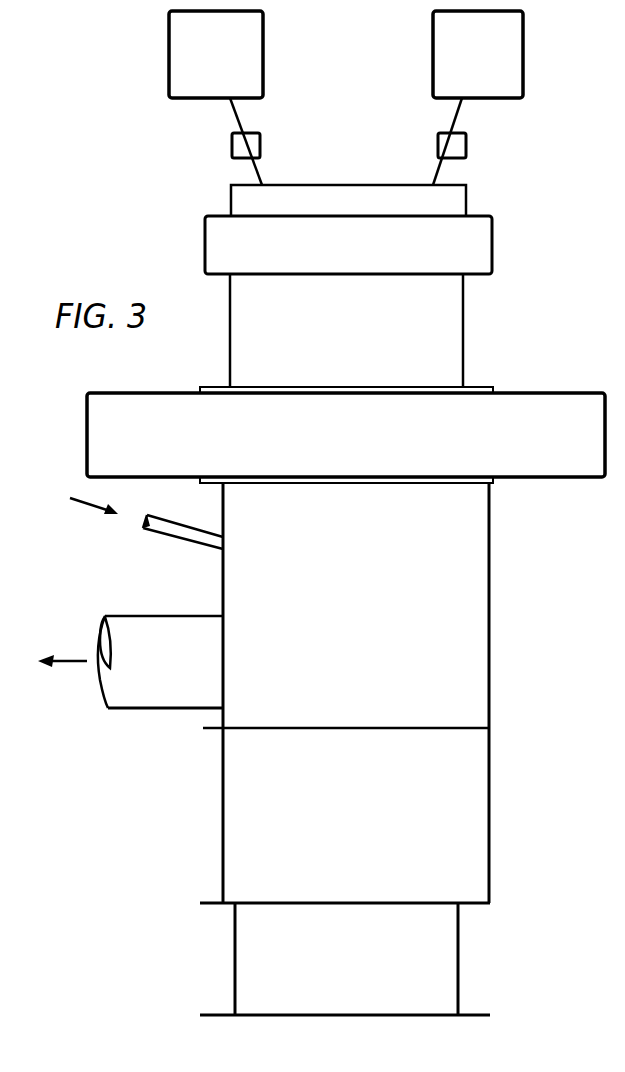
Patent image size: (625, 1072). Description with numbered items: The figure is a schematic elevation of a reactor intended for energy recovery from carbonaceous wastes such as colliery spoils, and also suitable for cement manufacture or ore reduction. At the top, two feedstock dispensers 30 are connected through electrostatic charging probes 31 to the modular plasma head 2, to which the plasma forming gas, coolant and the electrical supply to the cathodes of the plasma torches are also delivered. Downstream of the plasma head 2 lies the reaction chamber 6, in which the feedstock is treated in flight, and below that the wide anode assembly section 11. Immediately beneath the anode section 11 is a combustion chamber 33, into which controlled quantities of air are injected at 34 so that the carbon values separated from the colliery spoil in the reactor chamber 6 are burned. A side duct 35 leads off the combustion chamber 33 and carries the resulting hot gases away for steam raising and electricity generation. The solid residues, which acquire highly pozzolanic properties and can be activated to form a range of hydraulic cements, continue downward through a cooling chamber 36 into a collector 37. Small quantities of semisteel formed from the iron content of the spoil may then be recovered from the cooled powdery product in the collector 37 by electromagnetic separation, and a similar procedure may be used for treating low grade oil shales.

The modular plasma head 2 is at (492, 243).
The reaction chamber 6 is at (463, 333).
The anode assembly section 11 is at (553, 465).
The feedstock dispensers 30 is at (203, 66).
The electrostatic charging probes 31 is at (232, 145).
The combustion chamber 33 is at (478, 605).
The air injection 34 is at (180, 538).
The side duct 35 is at (165, 697).
The cooling chamber 36 is at (482, 812).
The collector 37 is at (458, 960).